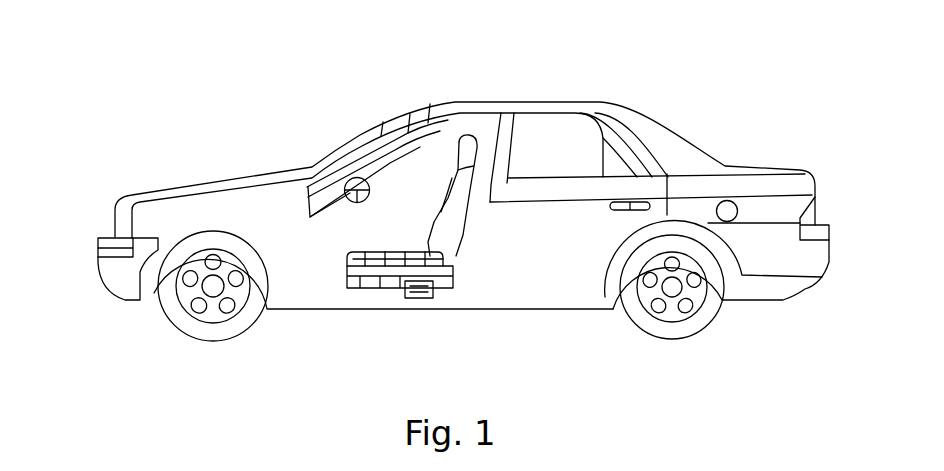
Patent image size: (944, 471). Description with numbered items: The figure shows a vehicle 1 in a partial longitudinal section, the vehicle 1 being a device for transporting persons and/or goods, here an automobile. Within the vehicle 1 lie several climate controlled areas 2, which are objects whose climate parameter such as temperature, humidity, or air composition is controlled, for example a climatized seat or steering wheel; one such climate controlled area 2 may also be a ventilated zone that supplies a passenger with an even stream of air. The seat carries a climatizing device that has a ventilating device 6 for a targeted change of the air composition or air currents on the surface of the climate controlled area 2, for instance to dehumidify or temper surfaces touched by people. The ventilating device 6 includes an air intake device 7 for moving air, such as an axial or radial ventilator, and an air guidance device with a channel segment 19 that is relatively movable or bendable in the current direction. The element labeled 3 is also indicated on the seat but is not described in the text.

The vehicle 1 is at (760, 149).
The climate controlled area 2 is at (310, 198).
The seat backrest 3 is at (452, 240).
The ventilating device 6 is at (344, 288).
The air intake device 7 is at (418, 299).
The channel segment 19 is at (370, 287).